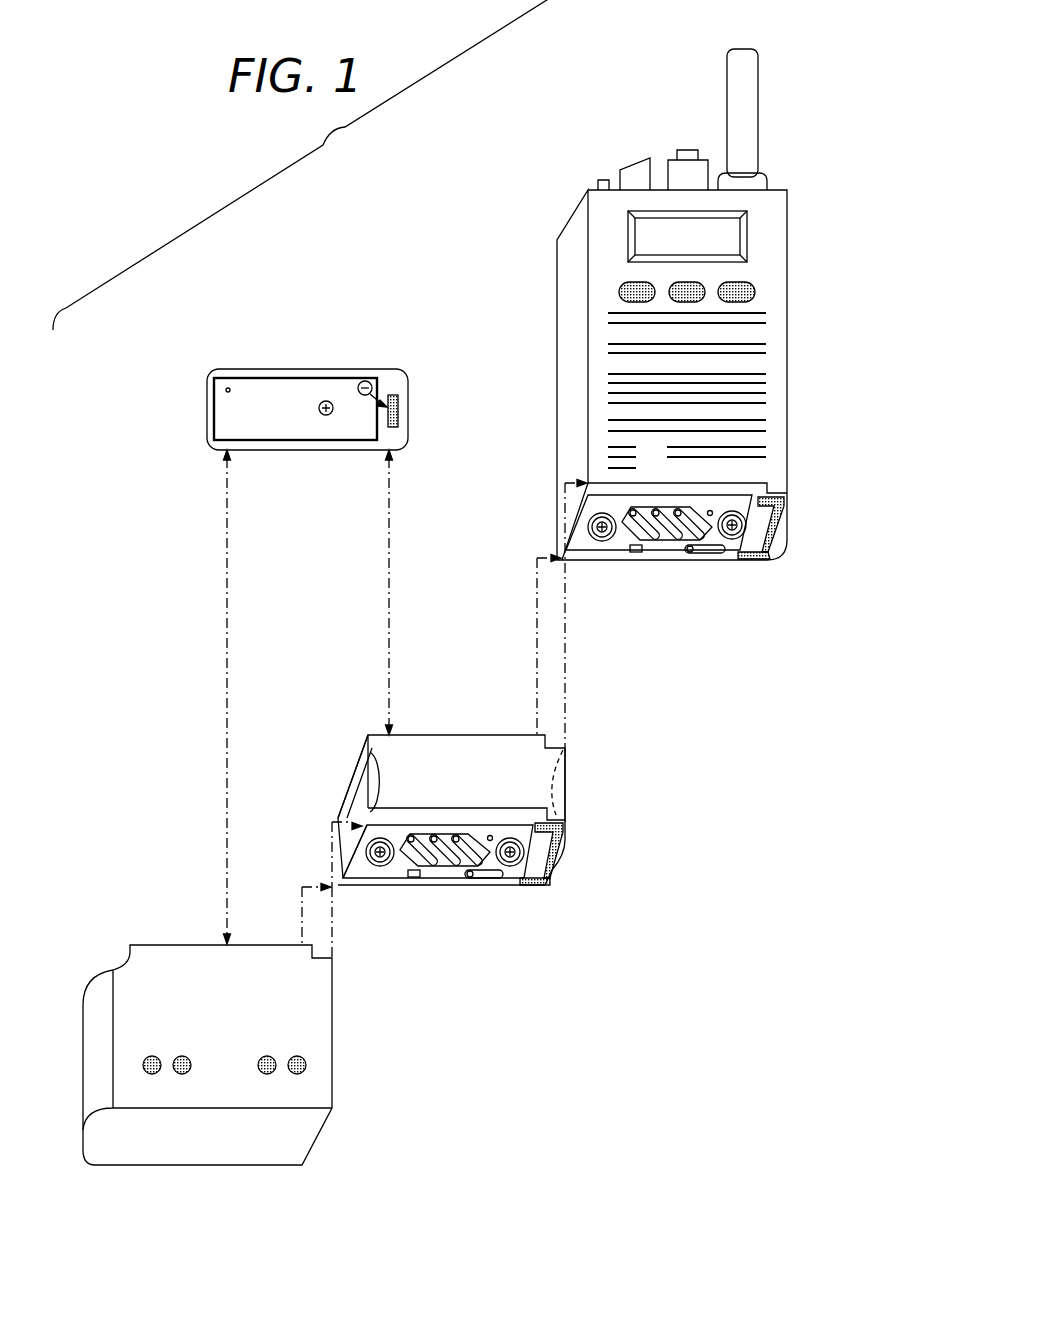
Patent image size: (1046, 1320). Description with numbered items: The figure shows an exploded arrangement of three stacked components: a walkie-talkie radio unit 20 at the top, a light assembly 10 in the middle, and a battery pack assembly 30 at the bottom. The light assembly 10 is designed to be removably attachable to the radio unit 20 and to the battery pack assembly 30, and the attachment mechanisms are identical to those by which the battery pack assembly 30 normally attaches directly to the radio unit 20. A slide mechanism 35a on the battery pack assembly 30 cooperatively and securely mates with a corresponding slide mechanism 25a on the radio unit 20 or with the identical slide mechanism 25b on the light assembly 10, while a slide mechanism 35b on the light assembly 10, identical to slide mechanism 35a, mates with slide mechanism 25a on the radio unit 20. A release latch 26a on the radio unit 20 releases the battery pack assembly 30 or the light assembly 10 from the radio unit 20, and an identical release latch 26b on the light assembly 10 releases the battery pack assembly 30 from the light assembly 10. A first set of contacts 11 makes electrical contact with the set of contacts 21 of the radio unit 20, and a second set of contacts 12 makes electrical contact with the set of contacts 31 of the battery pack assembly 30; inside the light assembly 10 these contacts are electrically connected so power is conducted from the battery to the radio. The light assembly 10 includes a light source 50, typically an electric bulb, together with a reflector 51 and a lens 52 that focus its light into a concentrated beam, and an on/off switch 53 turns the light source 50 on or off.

The light assembly 10 is at (480, 733).
The first set of contacts 11 is at (398, 412).
The second set of contacts 12 is at (470, 866).
The radio unit 20 is at (557, 260).
The set of contacts 21 is at (700, 539).
The slide mechanism 25a is at (752, 561).
The slide mechanism 25b is at (540, 888).
The release latch 26a is at (785, 528).
The release latch 26b is at (560, 853).
The battery pack assembly 30 is at (182, 943).
The set of contacts 31 is at (357, 380).
The slide mechanism 35a is at (248, 451).
The slide mechanism 35b is at (428, 728).
The light source 50 is at (362, 768).
The reflector 51 is at (342, 835).
The lens 52 is at (322, 815).
The on/off switch 53 is at (563, 778).